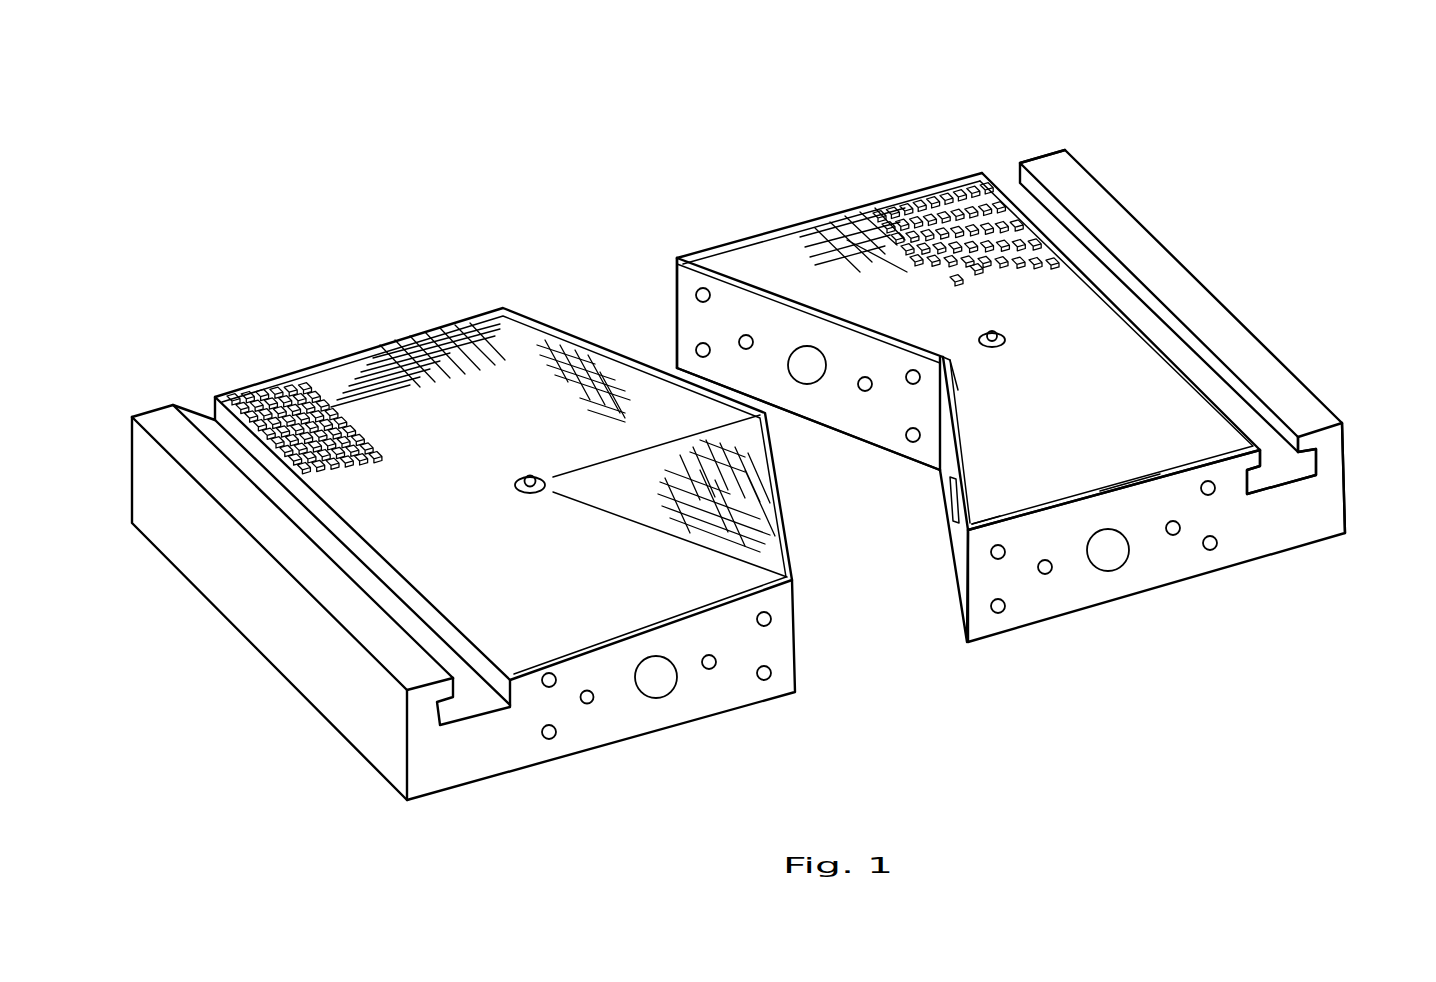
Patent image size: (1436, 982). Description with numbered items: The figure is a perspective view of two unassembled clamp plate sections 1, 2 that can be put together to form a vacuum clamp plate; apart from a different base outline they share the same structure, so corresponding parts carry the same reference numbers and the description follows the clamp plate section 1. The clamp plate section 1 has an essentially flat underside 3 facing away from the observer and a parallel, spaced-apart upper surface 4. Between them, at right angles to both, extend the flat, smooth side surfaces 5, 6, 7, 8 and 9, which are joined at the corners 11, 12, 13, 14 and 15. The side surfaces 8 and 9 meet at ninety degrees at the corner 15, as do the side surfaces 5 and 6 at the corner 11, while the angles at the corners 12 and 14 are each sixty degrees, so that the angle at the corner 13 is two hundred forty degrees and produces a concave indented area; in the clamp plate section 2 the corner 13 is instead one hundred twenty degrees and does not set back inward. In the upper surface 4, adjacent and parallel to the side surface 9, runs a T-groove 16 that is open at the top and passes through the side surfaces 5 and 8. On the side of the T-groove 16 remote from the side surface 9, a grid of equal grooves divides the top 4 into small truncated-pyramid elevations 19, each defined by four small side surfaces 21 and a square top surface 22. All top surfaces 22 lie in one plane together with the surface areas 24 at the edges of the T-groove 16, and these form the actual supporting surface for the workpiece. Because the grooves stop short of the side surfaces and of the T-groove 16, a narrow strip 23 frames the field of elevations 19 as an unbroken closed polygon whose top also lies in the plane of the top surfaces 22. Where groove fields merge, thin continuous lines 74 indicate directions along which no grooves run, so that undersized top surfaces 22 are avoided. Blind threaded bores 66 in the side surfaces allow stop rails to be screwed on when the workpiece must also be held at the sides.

The clamp plate section 1 is at (838, 166).
The clamp plate section 2 is at (360, 283).
The underside 3 is at (1020, 642).
The upper surface 4 is at (1092, 460).
The side surface 5 is at (1299, 538).
The side surface 6 is at (940, 477).
The side surface 7 is at (882, 426).
The side surface 8 is at (738, 240).
The side surface 9 is at (1262, 340).
The corner 11 is at (1346, 488).
The corner 12 is at (960, 597).
The corner 13 is at (952, 375).
The corner 14 is at (672, 300).
The corner 15 is at (1060, 158).
The T-groove 16 is at (1283, 463).
The elevations 19 is at (994, 292).
The side surfaces 21 is at (975, 272).
The top surface 22 is at (953, 283).
The strip 23 is at (995, 517).
The top surfaces 24 is at (1130, 485).
The threaded bores 66 is at (1206, 481).
The thin continuous lines 74 is at (640, 535).